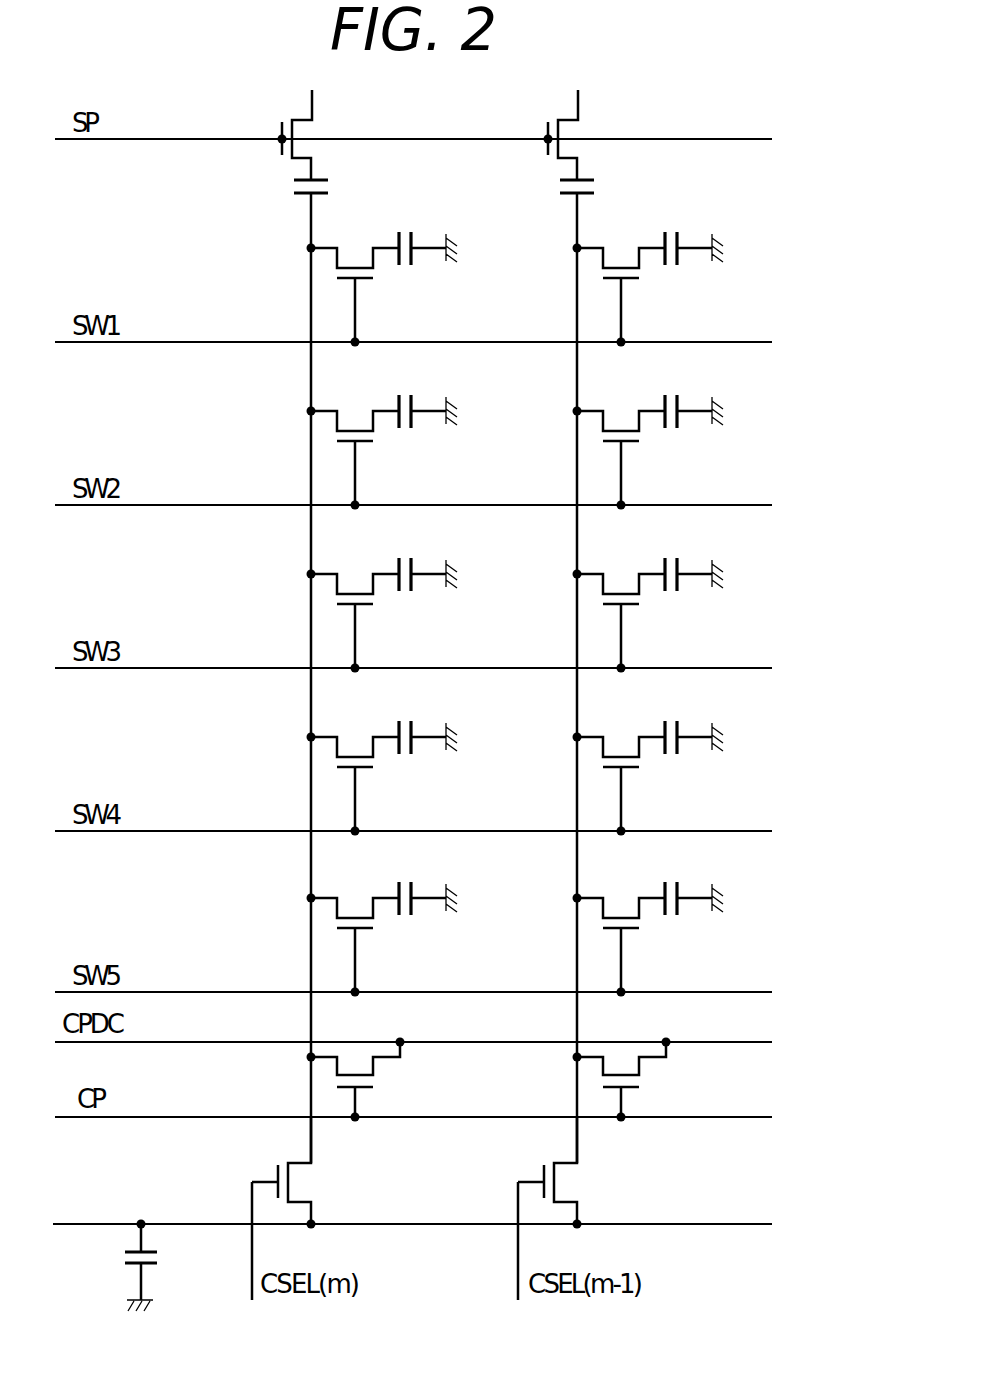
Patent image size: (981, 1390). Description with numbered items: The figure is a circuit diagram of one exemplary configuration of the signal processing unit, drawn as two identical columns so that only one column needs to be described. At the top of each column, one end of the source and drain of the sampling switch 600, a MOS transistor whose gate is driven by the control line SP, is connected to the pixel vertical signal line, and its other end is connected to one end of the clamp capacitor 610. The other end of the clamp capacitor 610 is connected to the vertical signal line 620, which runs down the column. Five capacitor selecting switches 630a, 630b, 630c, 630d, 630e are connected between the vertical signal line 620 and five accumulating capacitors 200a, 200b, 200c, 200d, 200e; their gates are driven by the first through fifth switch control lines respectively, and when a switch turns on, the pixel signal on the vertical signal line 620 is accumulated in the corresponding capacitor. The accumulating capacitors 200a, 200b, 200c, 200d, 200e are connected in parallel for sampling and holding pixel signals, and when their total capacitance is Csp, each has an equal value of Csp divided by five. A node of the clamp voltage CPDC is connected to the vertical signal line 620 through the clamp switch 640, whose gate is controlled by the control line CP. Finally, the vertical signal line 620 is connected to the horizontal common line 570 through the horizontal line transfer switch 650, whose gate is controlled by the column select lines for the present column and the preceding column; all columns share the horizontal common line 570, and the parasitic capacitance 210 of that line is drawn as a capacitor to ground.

The sampling switch 600 is at (312, 128).
The clamp capacitor 610 is at (329, 186).
The vertical signal line 620 is at (310, 308).
The capacitor selecting switch 630a is at (355, 262).
The capacitor selecting switch 630b is at (355, 421).
The capacitor selecting switch 630c is at (486, 599).
The capacitor selecting switch 630d is at (486, 762).
The capacitor selecting switch 630e is at (486, 923).
The accumulating capacitor 200a is at (408, 228).
The accumulating capacitor 200b is at (403, 396).
The accumulating capacitor 200c is at (587, 580).
The accumulating capacitor 200d is at (587, 743).
The accumulating capacitor 200e is at (587, 904).
The clamp switch 640 is at (380, 1075).
The horizontal line transfer switch 650 is at (305, 1180).
The horizontal common line 570 is at (105, 1222).
The parasitic capacitance 210 is at (124, 1256).